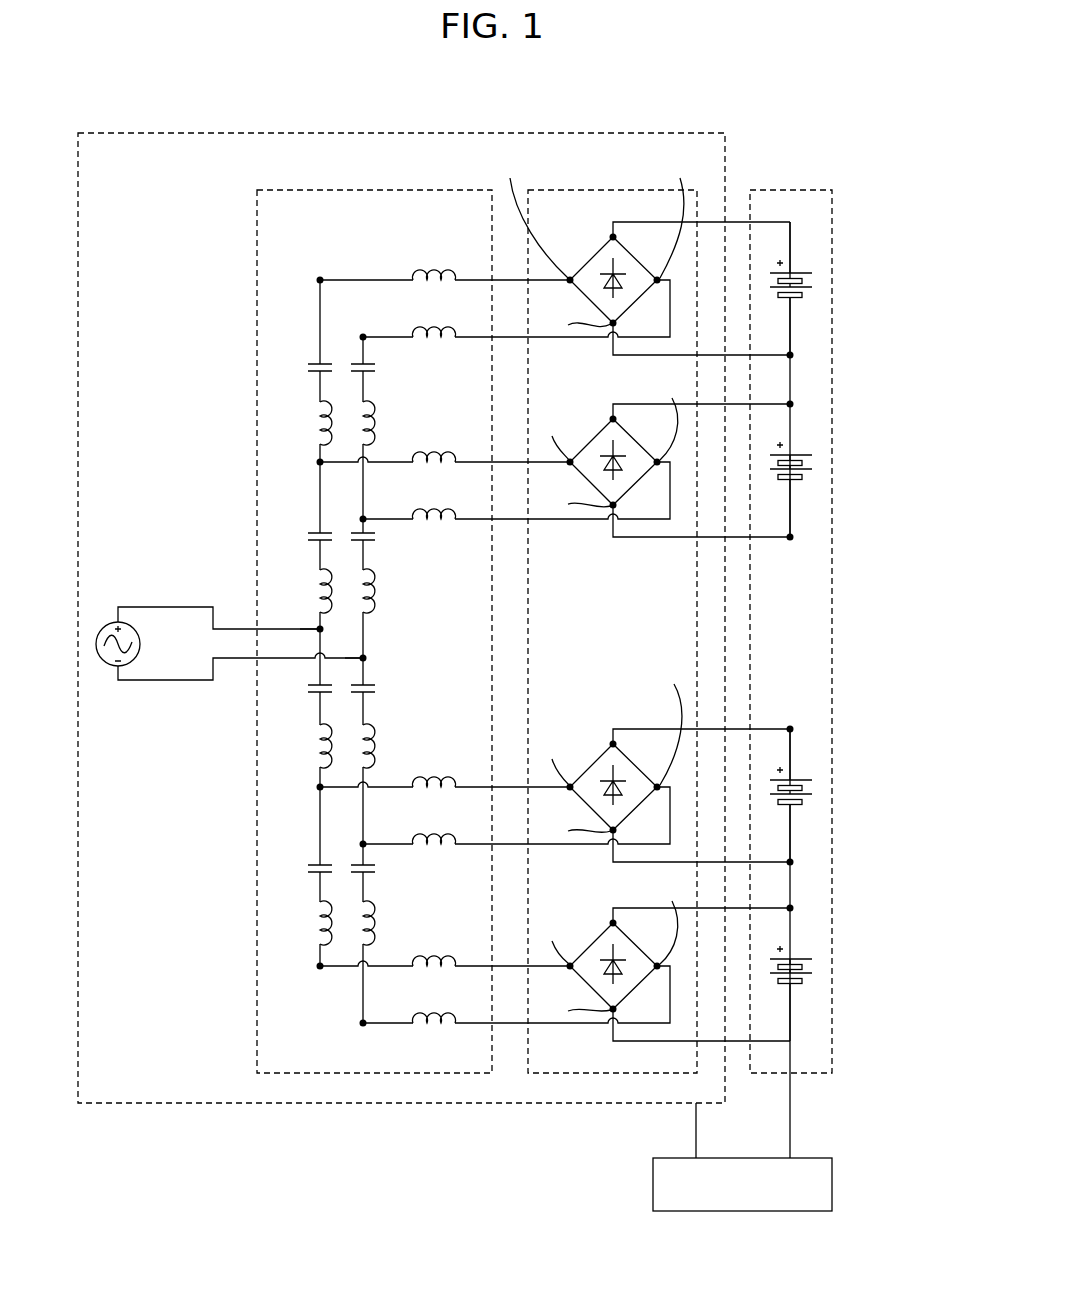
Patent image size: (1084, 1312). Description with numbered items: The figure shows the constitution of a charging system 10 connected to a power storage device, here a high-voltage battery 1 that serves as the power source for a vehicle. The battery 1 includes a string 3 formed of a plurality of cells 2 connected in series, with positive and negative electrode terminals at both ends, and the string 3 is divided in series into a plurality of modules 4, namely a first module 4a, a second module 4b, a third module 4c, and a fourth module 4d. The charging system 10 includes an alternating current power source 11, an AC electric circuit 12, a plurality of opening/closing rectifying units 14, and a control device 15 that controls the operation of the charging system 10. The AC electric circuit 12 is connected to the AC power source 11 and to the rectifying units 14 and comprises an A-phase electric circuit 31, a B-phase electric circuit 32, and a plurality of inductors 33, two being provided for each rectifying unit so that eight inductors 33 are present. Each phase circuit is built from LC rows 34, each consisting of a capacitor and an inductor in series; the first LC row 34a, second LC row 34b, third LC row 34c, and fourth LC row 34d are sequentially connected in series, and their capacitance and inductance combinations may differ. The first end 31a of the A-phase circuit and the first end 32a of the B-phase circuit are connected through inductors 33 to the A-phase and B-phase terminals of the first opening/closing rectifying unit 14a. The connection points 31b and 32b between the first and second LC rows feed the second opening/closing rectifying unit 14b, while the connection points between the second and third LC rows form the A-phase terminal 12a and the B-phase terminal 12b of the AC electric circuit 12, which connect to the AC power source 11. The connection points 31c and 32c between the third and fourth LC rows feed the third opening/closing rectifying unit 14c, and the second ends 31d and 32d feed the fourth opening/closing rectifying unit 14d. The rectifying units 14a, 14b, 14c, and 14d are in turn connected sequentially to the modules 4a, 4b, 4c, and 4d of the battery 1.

The high-voltage battery 1 is at (803, 190).
The cell 2 is at (806, 288).
The string 3 is at (800, 604).
The module 4 is at (849, 631).
The first module 4a is at (801, 246).
The second module 4b is at (801, 433).
The third module 4c is at (801, 753).
The fourth module 4d is at (801, 923).
The charging system 10 is at (730, 132).
The alternating current power source 11 is at (144, 627).
The AC electric circuit 12 is at (420, 184).
The A-phase terminal 12a is at (310, 628).
The B-phase terminal 12b is at (367, 658).
The opening/closing rectifying unit 14 is at (642, 595).
The first opening/closing rectifying unit 14a is at (590, 240).
The second opening/closing rectifying unit 14b is at (590, 423).
The third opening/closing rectifying unit 14c is at (590, 747).
The fourth opening/closing rectifying unit 14d is at (590, 927).
The control device 15 is at (834, 1186).
The A-phase electric circuit 31 is at (310, 318).
The first end 31a is at (318, 280).
The connection point 31b is at (318, 462).
The connection point 31c is at (318, 787).
The second end 31d is at (318, 966).
The B-phase electric circuit 32 is at (352, 990).
The first end 32a is at (363, 334).
The connection point 32b is at (364, 516).
The connection point 32c is at (364, 841).
The second end 32d is at (364, 1020).
The inductor 33 is at (458, 336).
The LC row 34 is at (252, 654).
The first LC row 34a is at (354, 398).
The second LC row 34b is at (354, 566).
The third LC row 34c is at (354, 721).
The fourth LC row 34d is at (354, 898).